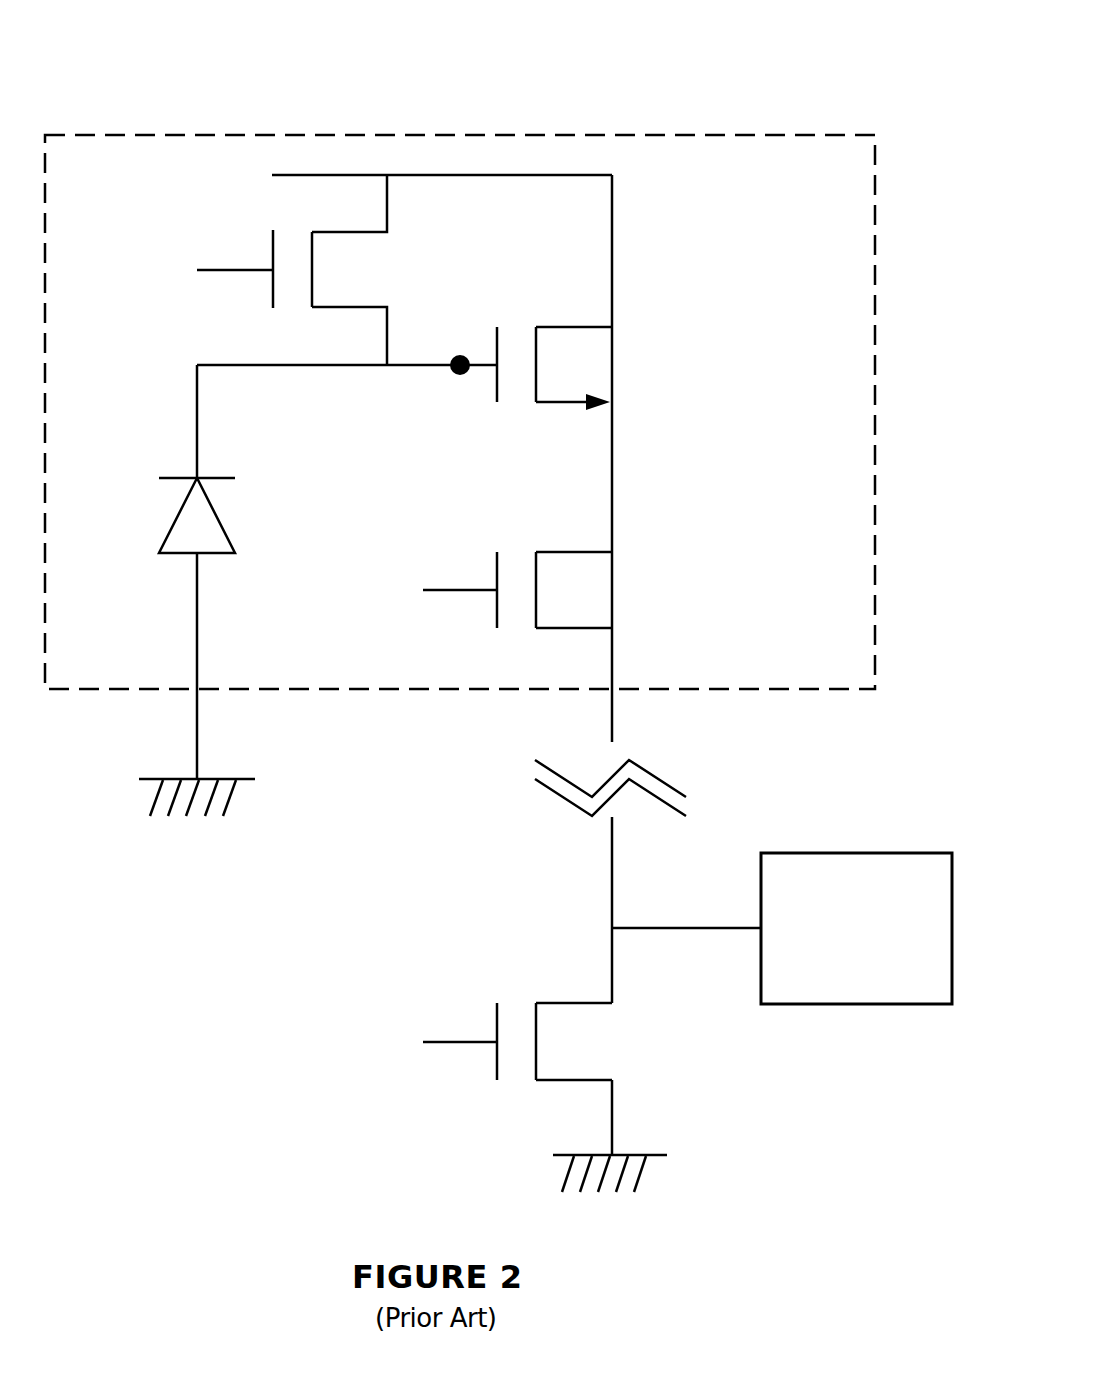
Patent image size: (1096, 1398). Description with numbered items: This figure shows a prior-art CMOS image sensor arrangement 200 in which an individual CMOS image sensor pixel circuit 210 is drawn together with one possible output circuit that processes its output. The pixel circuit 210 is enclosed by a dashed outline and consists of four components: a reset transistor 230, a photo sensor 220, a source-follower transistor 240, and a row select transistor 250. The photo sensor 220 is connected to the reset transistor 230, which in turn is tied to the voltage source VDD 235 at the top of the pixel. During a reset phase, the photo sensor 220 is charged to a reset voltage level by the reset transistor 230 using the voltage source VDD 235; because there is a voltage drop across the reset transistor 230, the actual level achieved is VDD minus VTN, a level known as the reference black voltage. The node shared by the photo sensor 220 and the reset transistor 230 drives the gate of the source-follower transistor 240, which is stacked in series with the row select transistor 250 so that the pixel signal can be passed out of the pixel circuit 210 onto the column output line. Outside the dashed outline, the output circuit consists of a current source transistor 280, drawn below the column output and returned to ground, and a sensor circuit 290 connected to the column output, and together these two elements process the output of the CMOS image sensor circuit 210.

The CMOS image sensor pixel circuit 200 is at (717, 97).
The CMOS image sensor pixel circuit 210 is at (460, 462).
The photo sensor 220 is at (230, 590).
The reset transistor 230 is at (277, 270).
The voltage source VDD 235 is at (383, 178).
The source-follower transistor 240 is at (602, 364).
The row select transistor 250 is at (509, 590).
The current source transistor 280 is at (522, 1097).
The sensor circuit 290 is at (856, 928).